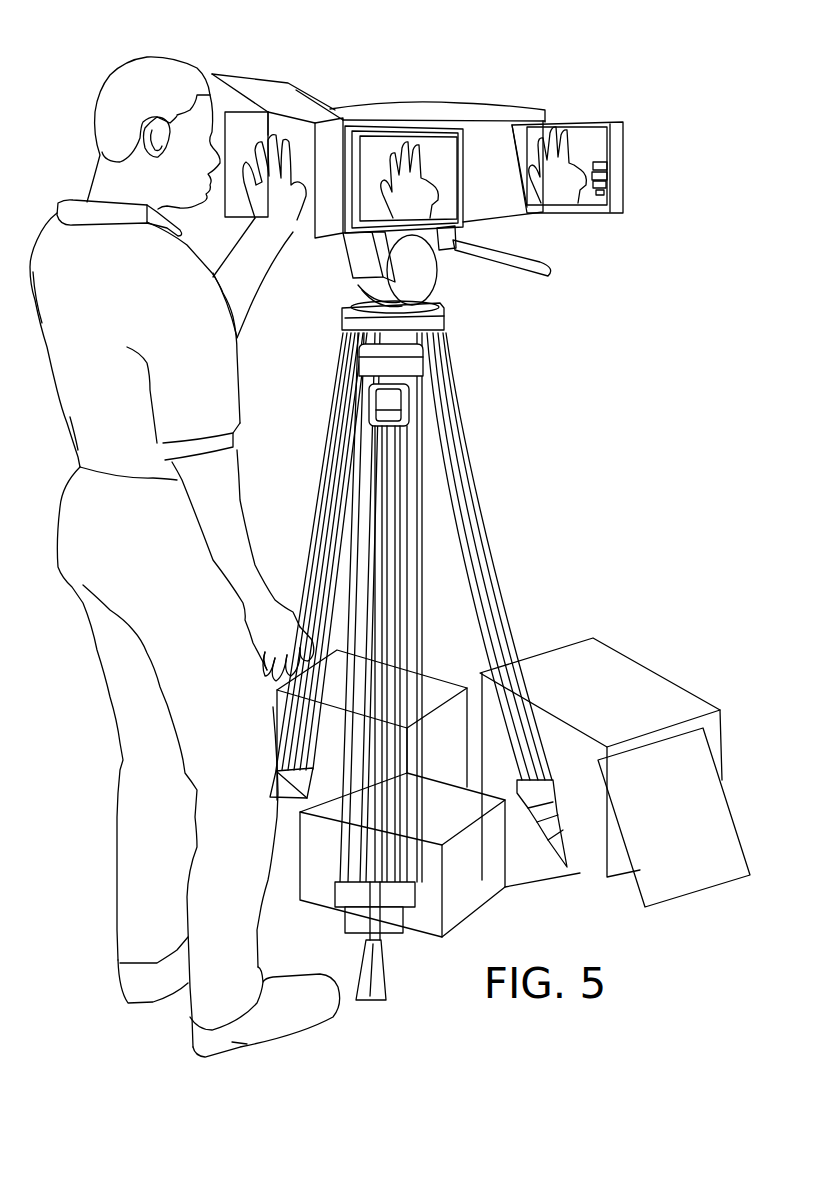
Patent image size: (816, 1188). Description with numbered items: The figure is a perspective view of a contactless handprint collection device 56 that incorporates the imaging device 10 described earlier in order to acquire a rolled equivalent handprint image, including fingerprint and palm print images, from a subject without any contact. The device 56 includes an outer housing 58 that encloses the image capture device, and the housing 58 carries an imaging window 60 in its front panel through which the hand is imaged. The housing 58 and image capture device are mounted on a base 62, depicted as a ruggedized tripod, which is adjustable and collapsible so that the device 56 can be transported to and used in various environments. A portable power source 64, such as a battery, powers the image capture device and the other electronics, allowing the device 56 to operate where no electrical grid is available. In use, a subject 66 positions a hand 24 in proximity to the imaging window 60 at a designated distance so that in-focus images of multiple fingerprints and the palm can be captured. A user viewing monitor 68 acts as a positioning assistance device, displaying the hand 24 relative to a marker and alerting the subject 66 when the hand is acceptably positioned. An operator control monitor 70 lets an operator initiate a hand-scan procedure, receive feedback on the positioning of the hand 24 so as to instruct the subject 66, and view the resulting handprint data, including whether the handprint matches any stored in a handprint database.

The imaging device 10 is at (490, 195).
The hand 24 is at (288, 238).
The contactless handprint collection device 56 is at (445, 28).
The outer housing 58 is at (495, 105).
The imaging window 60 is at (294, 135).
The base 62 is at (473, 467).
The portable power source 64 is at (450, 817).
The subject 66 is at (50, 368).
The user viewing monitor 68 is at (453, 245).
The operator control monitor 70 is at (613, 173).